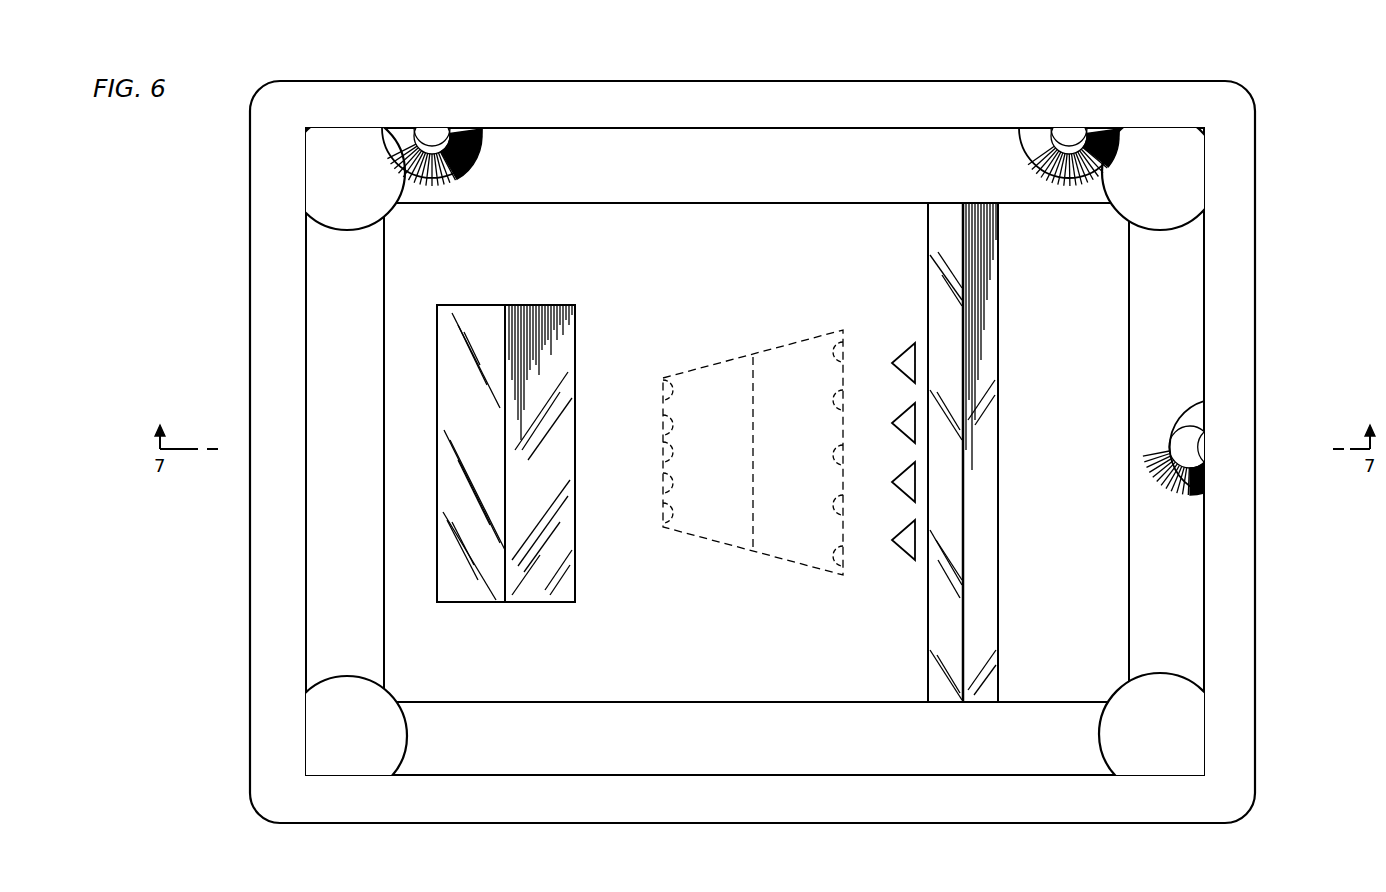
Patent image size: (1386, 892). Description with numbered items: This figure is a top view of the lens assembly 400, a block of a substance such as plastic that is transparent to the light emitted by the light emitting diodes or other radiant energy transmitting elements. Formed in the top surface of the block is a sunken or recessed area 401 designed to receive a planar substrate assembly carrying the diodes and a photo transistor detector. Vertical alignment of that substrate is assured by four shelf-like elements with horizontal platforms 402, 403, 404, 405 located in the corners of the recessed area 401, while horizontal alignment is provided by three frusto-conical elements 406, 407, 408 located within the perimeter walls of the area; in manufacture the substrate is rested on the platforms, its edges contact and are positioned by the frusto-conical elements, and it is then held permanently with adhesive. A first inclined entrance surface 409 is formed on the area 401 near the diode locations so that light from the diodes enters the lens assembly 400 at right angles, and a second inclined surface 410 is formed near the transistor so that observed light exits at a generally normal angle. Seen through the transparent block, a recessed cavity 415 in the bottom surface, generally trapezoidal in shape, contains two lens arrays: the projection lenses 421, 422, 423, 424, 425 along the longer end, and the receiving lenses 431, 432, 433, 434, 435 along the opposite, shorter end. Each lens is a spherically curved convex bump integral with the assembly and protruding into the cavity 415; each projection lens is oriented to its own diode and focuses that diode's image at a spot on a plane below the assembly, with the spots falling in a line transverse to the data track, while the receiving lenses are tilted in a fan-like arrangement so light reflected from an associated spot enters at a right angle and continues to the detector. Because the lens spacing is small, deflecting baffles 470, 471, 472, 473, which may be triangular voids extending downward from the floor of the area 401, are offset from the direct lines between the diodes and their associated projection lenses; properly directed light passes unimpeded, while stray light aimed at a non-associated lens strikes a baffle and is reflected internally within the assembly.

The lens assembly 400 is at (260, 226).
The recessed area 401 is at (724, 292).
The horizontal platform 402 is at (342, 178).
The horizontal platform 403 is at (344, 737).
The horizontal platform 404 is at (1182, 182).
The horizontal platform 405 is at (1165, 735).
The frusto-conical element 406 is at (478, 145).
The frusto-conical element 407 is at (1073, 139).
The frusto-conical element 408 is at (1182, 451).
The first inclined entrance surface 409 is at (990, 600).
The second inclined surface 410 is at (487, 305).
The recessed cavity 415 is at (750, 548).
The projection lens 421 is at (835, 561).
The projection lens 422 is at (835, 510).
The projection lens 423 is at (835, 460).
The projection lens 424 is at (835, 405).
The projection lens 425 is at (835, 357).
The receiving lens 431 is at (666, 518).
The receiving lens 432 is at (666, 488).
The receiving lens 433 is at (666, 457).
The receiving lens 434 is at (666, 430).
The receiving lens 435 is at (666, 395).
The deflecting baffle 470 is at (906, 542).
The deflecting baffle 471 is at (906, 484).
The deflecting baffle 472 is at (906, 425).
The deflecting baffle 473 is at (906, 365).